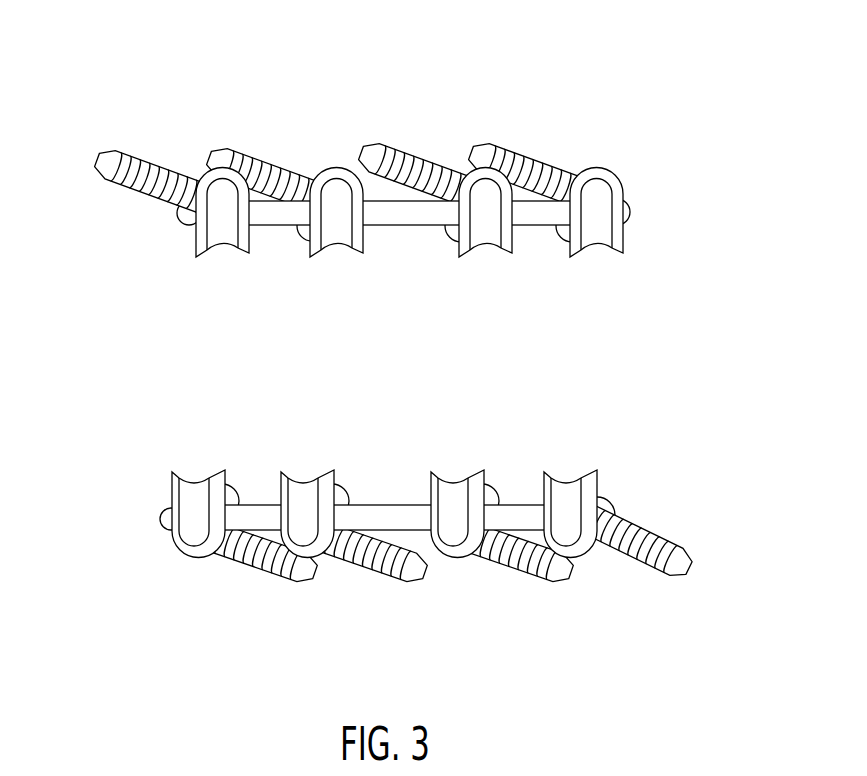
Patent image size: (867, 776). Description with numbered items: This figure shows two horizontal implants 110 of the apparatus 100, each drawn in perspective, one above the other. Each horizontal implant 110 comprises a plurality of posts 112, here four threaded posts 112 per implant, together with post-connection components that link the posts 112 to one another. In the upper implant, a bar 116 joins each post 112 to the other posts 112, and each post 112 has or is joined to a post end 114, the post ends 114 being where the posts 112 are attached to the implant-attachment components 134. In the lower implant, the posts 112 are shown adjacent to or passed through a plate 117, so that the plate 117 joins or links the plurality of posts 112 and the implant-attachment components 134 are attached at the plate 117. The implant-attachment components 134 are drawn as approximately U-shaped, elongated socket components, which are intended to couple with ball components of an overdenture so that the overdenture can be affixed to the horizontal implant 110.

The apparatus 100 is at (128, 615).
The horizontal implant 110 is at (474, 100).
The post 112 is at (480, 148).
The post end 114 is at (623, 196).
The bar 116 is at (281, 226).
The plate 117 is at (230, 490).
The implant-attachment component 134 is at (602, 166).